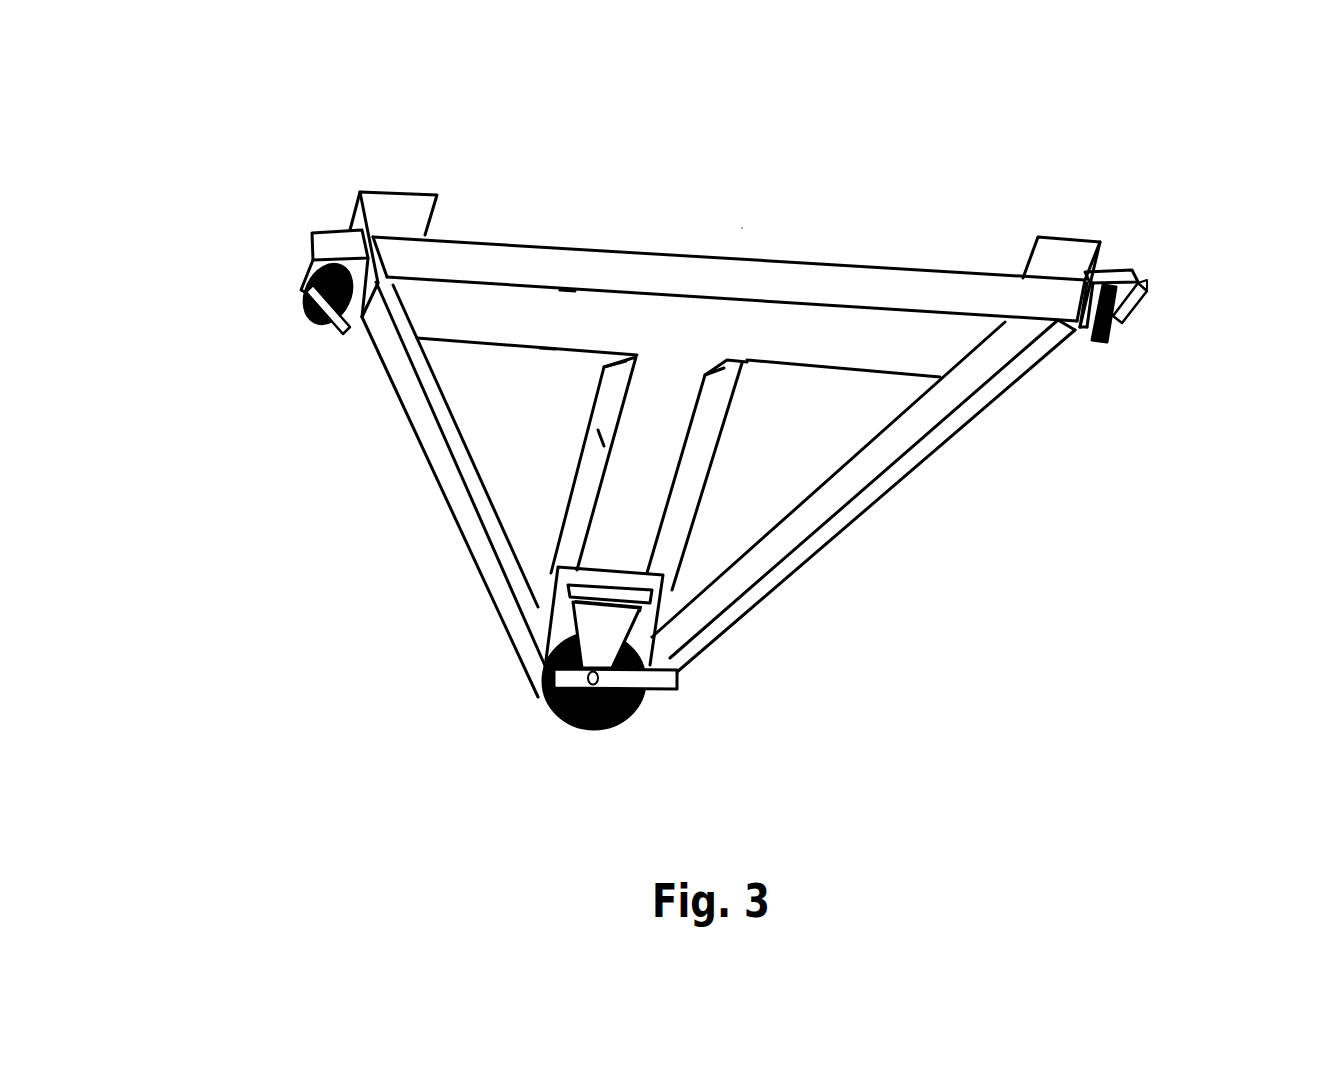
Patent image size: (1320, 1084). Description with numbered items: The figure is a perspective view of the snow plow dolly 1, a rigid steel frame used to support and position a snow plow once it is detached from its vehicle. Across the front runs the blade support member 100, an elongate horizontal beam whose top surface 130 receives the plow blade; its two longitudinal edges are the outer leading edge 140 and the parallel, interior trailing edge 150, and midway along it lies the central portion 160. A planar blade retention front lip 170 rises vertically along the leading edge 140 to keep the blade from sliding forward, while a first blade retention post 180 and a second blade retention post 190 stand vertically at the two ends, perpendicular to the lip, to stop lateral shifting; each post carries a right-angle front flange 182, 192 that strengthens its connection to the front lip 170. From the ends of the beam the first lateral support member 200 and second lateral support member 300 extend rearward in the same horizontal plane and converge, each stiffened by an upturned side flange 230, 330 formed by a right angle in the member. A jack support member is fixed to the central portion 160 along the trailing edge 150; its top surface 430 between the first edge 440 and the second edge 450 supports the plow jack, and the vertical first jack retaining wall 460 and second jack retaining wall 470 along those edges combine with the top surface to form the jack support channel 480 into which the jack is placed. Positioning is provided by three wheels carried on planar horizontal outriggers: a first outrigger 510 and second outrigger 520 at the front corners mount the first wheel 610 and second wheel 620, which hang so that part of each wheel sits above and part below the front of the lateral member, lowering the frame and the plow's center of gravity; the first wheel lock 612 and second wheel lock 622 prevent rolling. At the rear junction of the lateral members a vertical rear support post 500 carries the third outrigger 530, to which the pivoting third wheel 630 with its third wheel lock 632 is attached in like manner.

The snow plow dolly 1 is at (742, 229).
The blade support member 100 is at (923, 270).
The top surface 130 is at (835, 345).
The leading edge 140 is at (567, 288).
The trailing edge 150 is at (547, 347).
The central portion 160 is at (690, 333).
The blade retention front lip 170 is at (673, 268).
The first blade retention post 180 is at (352, 226).
The front flange 182 is at (387, 207).
The second blade retention post 190 is at (1078, 337).
The front flange 192 is at (1055, 245).
The first lateral support member 200 is at (455, 513).
The side flange 230 is at (420, 418).
The second lateral support member 300 is at (812, 568).
The side flange 330 is at (912, 460).
The top surface 430 is at (648, 423).
The first edge 440 is at (602, 482).
The second edge 450 is at (694, 522).
The first jack retaining wall 460 is at (603, 438).
The second jack retaining wall 470 is at (707, 420).
The jack support channel 480 is at (622, 518).
The rear support post 500 is at (560, 625).
The first outrigger 510 is at (336, 248).
The second outrigger 520 is at (1130, 266).
The third outrigger 530 is at (560, 596).
The first wheel 610 is at (305, 305).
The first wheel lock 612 is at (332, 335).
The second wheel 620 is at (1105, 342).
The second wheel lock 622 is at (1148, 290).
The third wheel 630 is at (547, 707).
The third wheel lock 632 is at (640, 678).